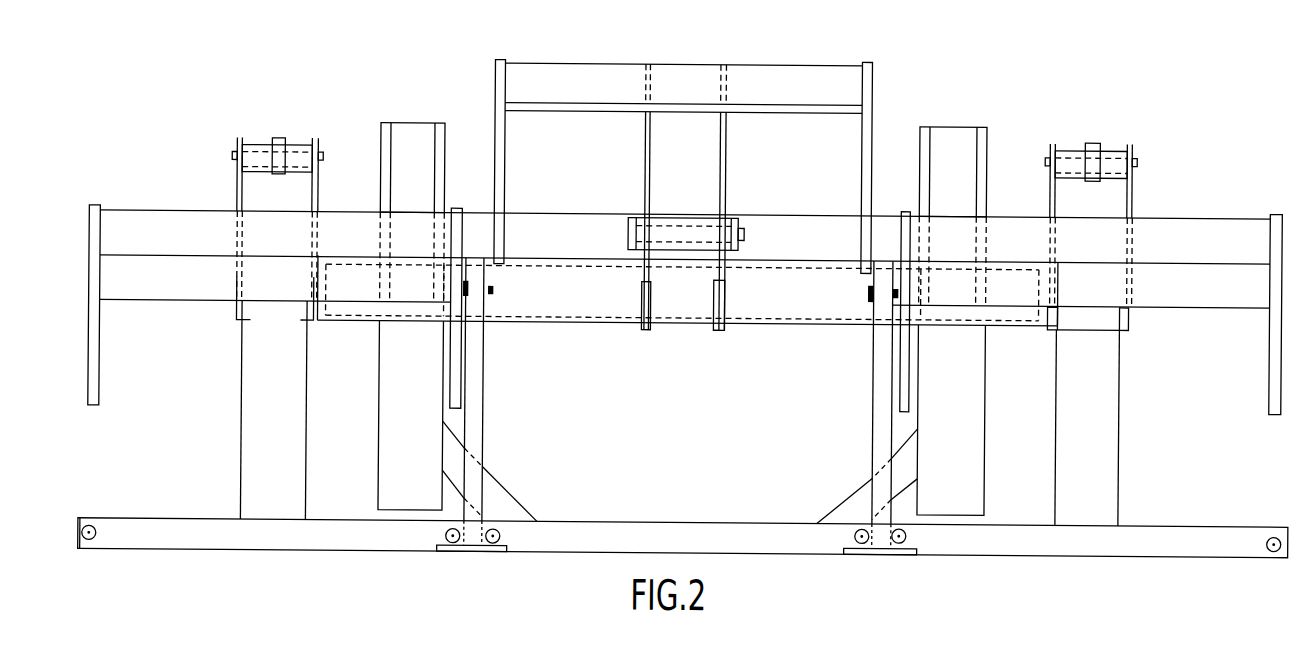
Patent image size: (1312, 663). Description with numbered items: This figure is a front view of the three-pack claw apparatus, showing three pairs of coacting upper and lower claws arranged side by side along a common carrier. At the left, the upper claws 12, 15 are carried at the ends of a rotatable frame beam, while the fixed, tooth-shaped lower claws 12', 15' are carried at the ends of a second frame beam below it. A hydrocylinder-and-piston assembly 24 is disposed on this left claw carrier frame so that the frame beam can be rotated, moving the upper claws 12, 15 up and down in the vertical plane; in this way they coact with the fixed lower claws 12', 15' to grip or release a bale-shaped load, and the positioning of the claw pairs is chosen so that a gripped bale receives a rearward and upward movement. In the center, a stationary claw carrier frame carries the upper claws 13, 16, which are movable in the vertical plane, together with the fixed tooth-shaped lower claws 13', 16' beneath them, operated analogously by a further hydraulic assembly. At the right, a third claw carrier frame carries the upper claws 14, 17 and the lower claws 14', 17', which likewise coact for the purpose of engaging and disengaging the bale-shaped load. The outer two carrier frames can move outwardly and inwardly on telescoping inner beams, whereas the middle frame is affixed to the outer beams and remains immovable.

The upper claw 12 is at (116, 305).
The upper claw 13 is at (677, 196).
The upper claw 14 is at (896, 281).
The upper claw 15 is at (793, 305).
The upper claw 16 is at (848, 167).
The upper claw 17 is at (1255, 314).
The hydrocylinder-and-piston assembly 24 is at (276, 132).
The lower claw 12' is at (118, 555).
The lower claw 13' is at (511, 564).
The lower claw 14' is at (914, 564).
The lower claw 15' is at (446, 565).
The lower claw 16' is at (853, 564).
The lower claw 17' is at (1265, 569).